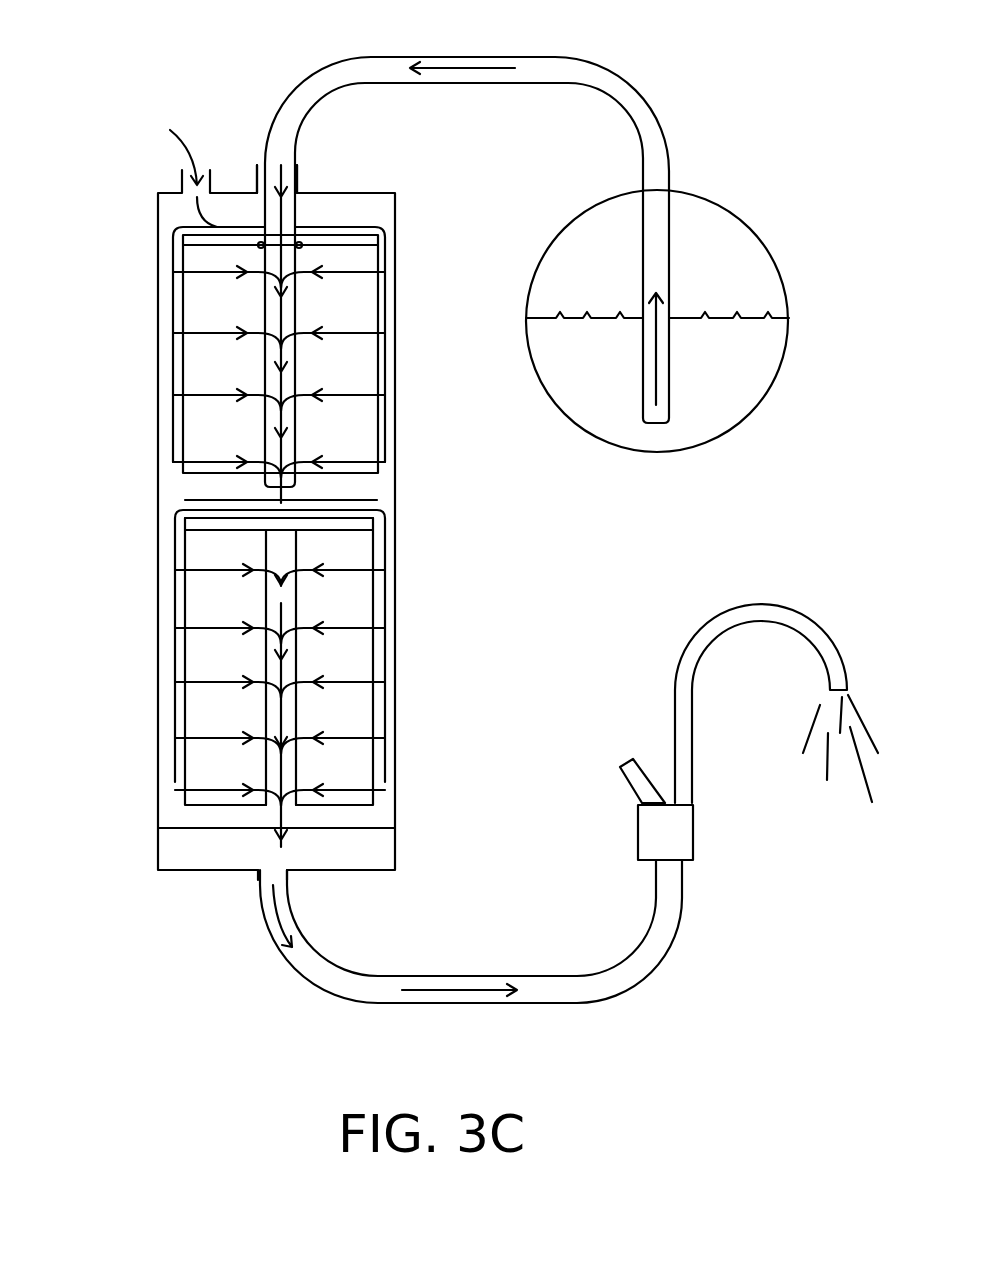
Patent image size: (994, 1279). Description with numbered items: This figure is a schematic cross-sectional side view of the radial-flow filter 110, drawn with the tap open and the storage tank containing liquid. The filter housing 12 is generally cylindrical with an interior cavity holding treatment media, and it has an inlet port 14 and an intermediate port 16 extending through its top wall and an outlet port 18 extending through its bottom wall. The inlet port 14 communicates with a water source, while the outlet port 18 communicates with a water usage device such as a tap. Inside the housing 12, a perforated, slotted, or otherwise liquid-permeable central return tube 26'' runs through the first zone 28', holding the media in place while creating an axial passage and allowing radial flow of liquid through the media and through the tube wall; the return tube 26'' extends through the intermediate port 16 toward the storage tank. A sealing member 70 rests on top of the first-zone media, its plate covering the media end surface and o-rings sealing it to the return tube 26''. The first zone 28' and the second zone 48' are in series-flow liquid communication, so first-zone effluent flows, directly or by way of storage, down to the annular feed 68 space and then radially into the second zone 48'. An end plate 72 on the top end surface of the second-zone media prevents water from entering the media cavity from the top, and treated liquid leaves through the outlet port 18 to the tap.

The filter 110 is at (192, 79).
The filter housing 12 is at (397, 485).
The inlet port 14 is at (182, 187).
The intermediate port 16 is at (298, 180).
The outlet port 18 is at (288, 883).
The central return tube 26'' is at (370, 506).
The first zone 28' is at (247, 331).
The second zone 48' is at (255, 660).
The annular feed space 68 is at (388, 570).
The sealing member 70 is at (352, 242).
The end plate 72 is at (355, 528).